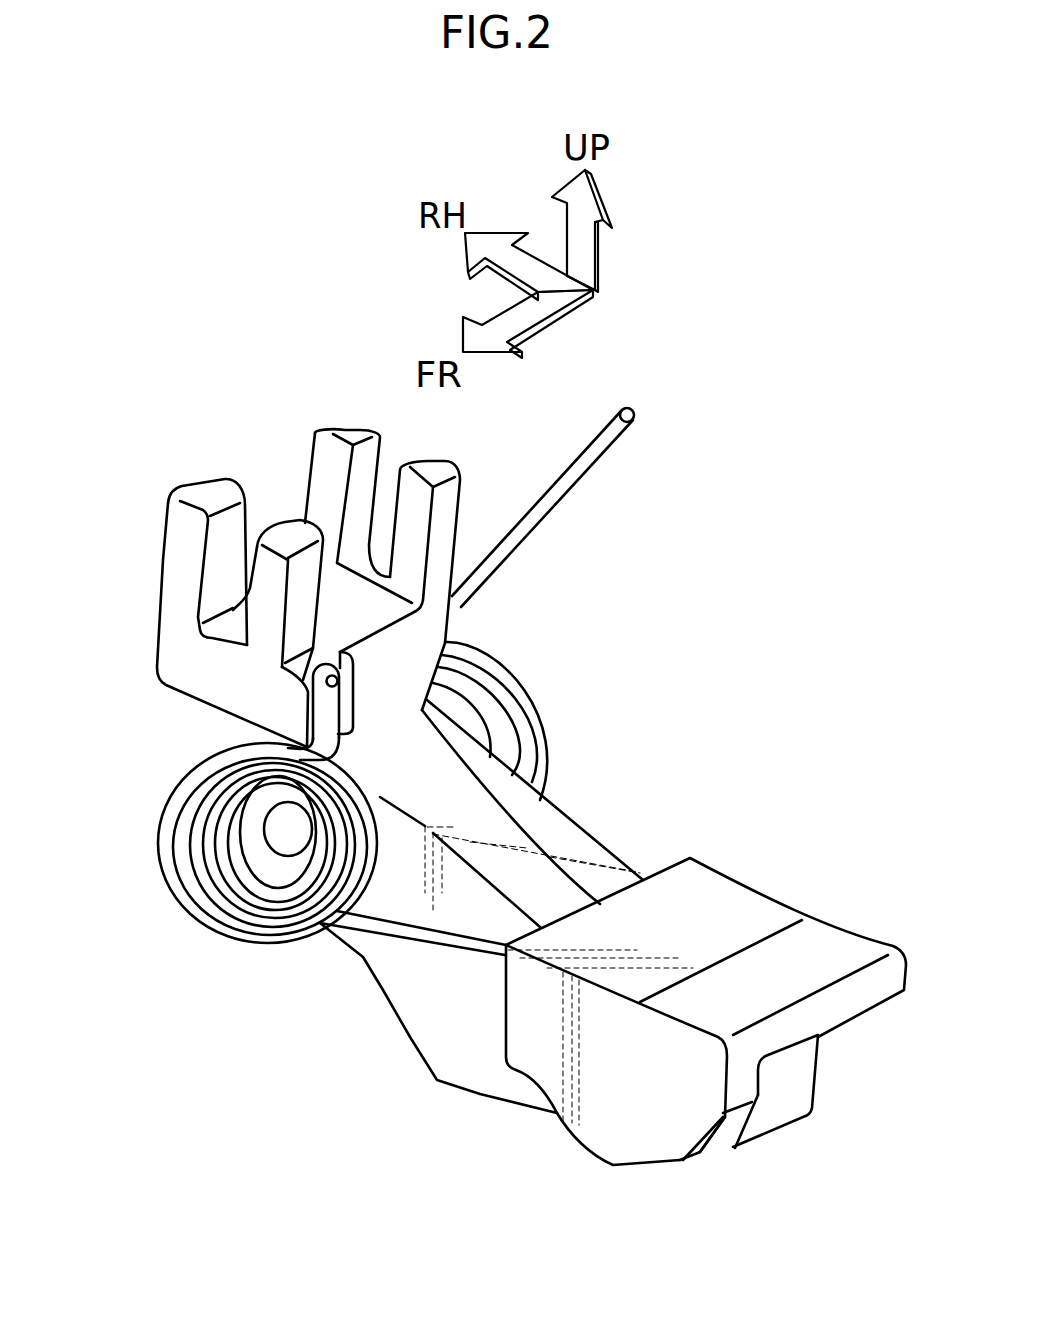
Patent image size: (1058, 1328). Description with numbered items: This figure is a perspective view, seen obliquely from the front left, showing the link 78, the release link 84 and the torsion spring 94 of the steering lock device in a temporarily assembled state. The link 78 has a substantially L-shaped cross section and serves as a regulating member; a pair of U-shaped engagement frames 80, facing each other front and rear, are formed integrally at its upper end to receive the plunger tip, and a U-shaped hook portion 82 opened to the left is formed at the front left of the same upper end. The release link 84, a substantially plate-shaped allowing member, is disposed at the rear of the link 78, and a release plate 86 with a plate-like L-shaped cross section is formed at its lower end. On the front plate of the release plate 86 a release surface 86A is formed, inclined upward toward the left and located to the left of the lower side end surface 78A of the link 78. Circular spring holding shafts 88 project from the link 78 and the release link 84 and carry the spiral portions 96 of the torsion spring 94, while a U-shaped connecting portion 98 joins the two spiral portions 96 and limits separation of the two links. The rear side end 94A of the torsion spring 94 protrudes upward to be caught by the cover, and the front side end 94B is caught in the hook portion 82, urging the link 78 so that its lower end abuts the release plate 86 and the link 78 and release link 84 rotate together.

The link 78 is at (408, 1038).
The lower side end surface 78A is at (790, 1081).
The engagement frames 80 is at (317, 450).
The hook portion 82 is at (358, 692).
The release link 84 is at (592, 833).
The release plate 86 is at (763, 891).
The release surface 86A is at (720, 1147).
The spring holding shaft 88 is at (283, 867).
The torsion spring 94 is at (531, 499).
The rear side end 94A is at (631, 424).
The front side end 94B is at (353, 702).
The spiral portions 96 is at (160, 806).
The connecting portion 98 is at (423, 943).